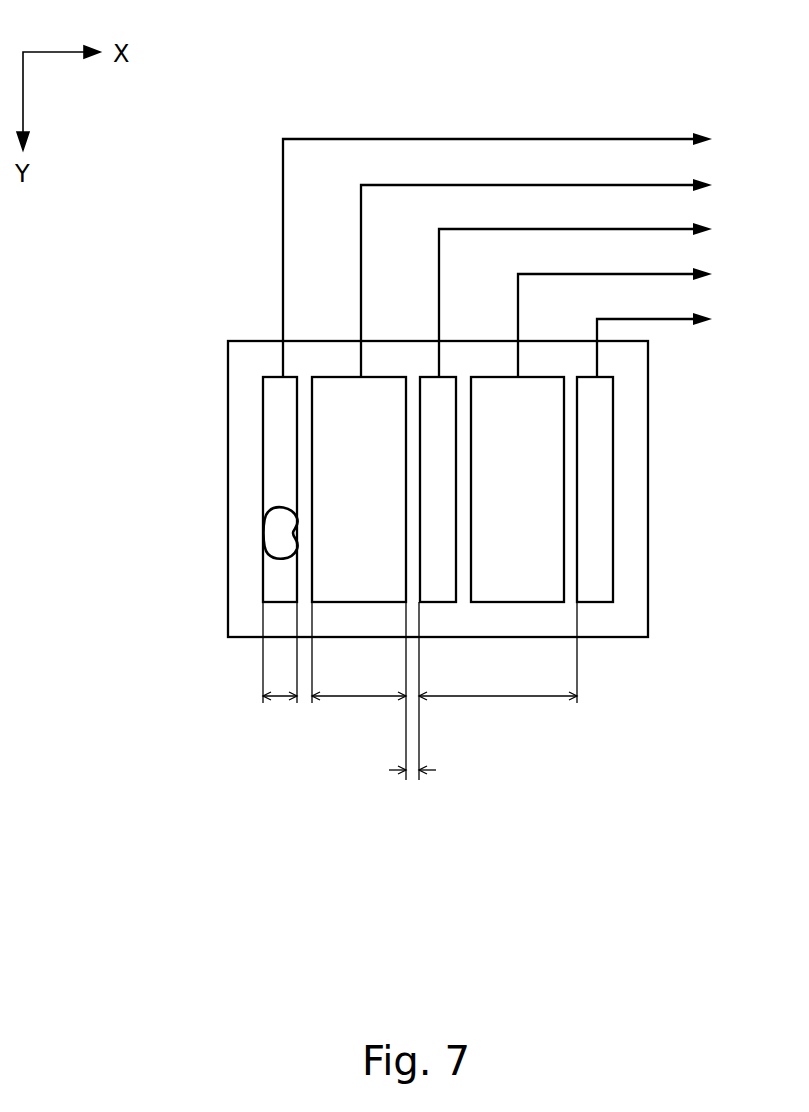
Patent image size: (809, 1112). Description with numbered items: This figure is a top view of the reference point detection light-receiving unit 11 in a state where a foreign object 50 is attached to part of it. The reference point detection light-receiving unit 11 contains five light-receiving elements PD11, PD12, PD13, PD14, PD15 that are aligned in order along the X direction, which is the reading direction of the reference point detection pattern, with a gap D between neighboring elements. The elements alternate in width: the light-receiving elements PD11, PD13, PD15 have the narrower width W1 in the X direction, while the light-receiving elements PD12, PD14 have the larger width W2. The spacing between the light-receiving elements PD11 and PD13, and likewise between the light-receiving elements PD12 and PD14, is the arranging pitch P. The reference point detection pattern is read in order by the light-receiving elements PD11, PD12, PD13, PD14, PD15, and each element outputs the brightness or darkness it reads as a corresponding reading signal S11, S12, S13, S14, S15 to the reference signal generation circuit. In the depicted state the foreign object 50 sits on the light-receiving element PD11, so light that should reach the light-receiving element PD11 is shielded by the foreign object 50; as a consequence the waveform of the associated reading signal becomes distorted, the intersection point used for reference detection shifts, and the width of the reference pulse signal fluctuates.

The reference point detection light-receiving unit 11 is at (458, 46).
The foreign object 50 is at (277, 533).
The light-receiving element PD11 is at (280, 489).
The light-receiving element PD12 is at (359, 489).
The light-receiving element PD13 is at (438, 489).
The light-receiving element PD14 is at (517, 489).
The light-receiving element PD15 is at (595, 489).
The reading signal S11 is at (520, 251).
The reading signal S12 is at (559, 274).
The reading signal S13 is at (598, 296).
The reading signal S14 is at (638, 318).
The reading signal S15 is at (677, 341).
The width of light-receiving elements PD11, PD13, and PD15 W1 is at (280, 672).
The width of light-receiving elements PD12 and PD14 W2 is at (359, 691).
The arranging pitch P is at (498, 691).
The gap D is at (412, 793).